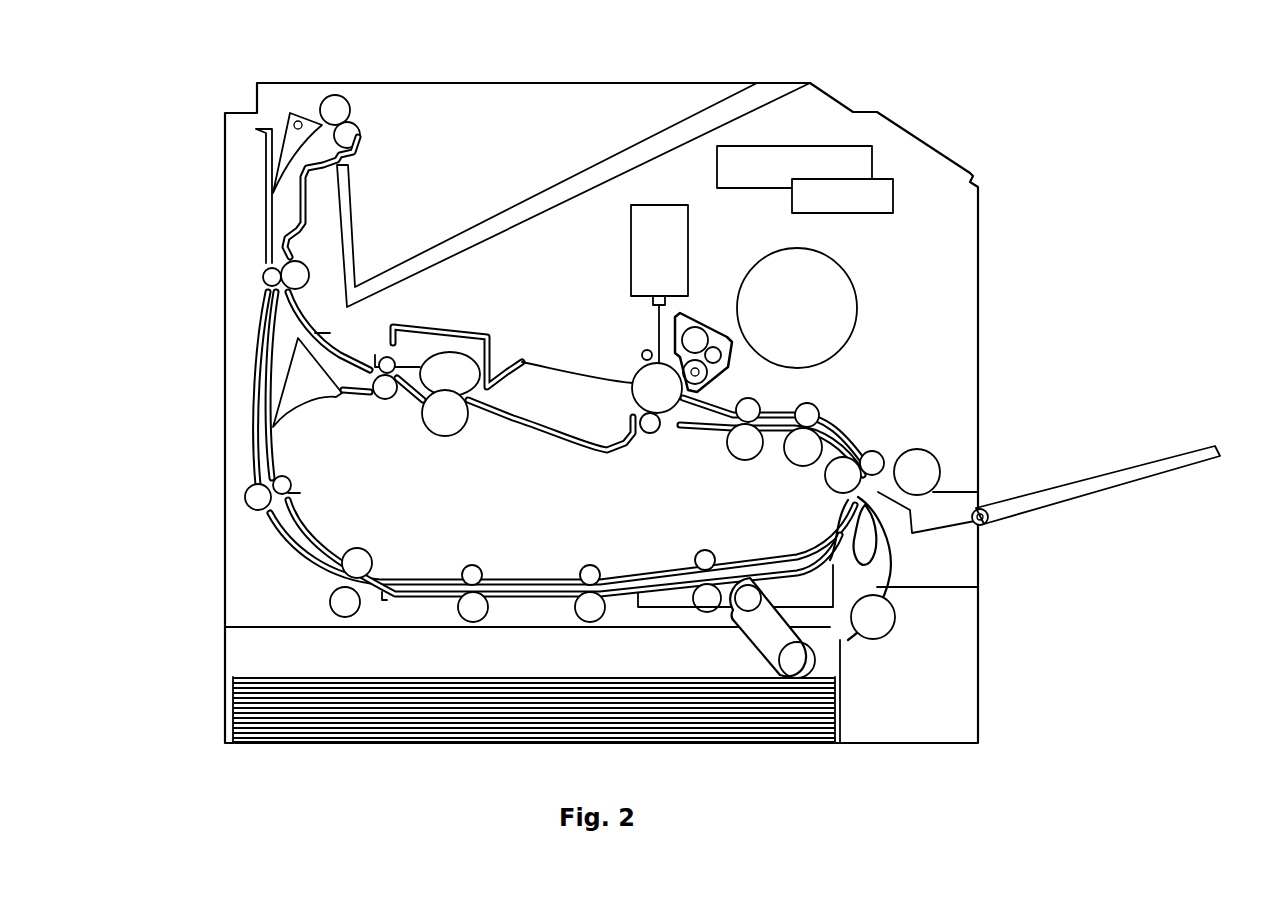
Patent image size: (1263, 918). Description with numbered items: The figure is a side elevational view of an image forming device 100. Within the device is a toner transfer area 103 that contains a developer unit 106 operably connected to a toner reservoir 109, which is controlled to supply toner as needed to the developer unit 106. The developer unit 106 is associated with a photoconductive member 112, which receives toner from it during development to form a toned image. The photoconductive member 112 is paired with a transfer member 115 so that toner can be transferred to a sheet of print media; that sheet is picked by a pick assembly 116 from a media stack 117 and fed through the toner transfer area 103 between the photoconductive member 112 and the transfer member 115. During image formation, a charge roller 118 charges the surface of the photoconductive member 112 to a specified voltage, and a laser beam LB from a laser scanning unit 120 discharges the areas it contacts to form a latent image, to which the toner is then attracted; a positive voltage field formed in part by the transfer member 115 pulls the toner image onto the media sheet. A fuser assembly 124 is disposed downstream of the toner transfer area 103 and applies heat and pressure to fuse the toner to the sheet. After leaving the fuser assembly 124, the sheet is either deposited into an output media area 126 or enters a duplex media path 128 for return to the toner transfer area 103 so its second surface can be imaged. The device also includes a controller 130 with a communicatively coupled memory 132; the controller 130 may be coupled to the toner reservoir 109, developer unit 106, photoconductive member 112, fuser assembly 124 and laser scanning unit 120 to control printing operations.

The image forming device 100 is at (884, 62).
The toner transfer area 103 is at (690, 414).
The developer unit 106 is at (740, 387).
The toner reservoir 109 is at (797, 308).
The photoconductive member 112 is at (657, 388).
The transfer member 115 is at (652, 434).
The pick assembly 116 is at (725, 649).
The media stack 117 is at (618, 677).
The charge roller 118 is at (643, 350).
The laser scanning unit 120 is at (630, 247).
The fuser assembly 124 is at (476, 425).
The output media area 126 is at (439, 192).
The duplex media path 128 is at (265, 380).
The controller 130 is at (780, 146).
The memory 132 is at (873, 214).